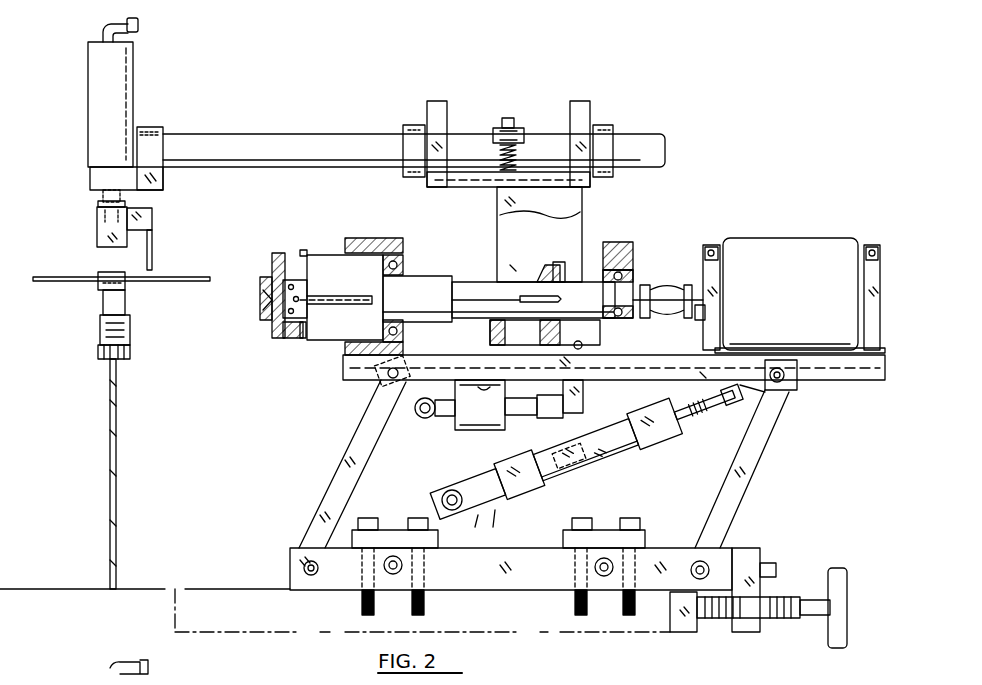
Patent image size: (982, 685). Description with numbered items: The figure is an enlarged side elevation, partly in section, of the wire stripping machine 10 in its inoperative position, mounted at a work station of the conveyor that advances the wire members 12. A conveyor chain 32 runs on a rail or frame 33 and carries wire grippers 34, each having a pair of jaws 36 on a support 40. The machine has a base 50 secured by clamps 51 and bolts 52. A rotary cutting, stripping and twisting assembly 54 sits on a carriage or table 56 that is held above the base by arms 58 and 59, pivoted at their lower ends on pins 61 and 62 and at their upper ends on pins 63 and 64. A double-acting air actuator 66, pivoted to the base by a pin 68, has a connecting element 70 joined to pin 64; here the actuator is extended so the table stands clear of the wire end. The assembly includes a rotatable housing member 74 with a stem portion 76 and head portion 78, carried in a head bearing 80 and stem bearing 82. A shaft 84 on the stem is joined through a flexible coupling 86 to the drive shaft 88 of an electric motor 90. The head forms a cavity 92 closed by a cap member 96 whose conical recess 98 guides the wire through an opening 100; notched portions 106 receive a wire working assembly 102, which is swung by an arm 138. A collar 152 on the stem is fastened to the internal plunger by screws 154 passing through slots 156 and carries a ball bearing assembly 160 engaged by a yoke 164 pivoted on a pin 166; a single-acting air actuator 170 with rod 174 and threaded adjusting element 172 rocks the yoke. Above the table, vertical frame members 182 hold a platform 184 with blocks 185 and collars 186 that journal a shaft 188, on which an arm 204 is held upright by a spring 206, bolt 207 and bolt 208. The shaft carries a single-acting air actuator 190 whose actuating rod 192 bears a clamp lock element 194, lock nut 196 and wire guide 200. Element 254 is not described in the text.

The wire stripping machine 10 is at (347, 100).
The wire member 12 is at (165, 278).
The conveyor chain 32 is at (125, 358).
The rail or frame 33 is at (116, 425).
The wire gripper 34 is at (98, 338).
The jaws 36 is at (98, 287).
The support 40 is at (130, 325).
The base 50 is at (500, 590).
The clamps 51 is at (405, 550).
The bolts 52 is at (418, 518).
The rotary cutting, stripping and twisting assembly 54 is at (368, 236).
The carriage or table 56 is at (668, 218).
The arm 58 is at (345, 458).
The arm 59 is at (748, 482).
The pin 61 is at (304, 568).
The pin 62 is at (694, 562).
The pin 63 is at (385, 380).
The pin 64 is at (797, 376).
The double-acting air actuator 66 is at (588, 472).
The pin 68 is at (445, 493).
The connecting element 70 is at (760, 405).
The rotatable housing member 74 is at (445, 275).
The stem portion 76 is at (508, 282).
The head portion 78 is at (330, 255).
The head bearing 80 is at (403, 262).
The stem bearing 82 is at (625, 270).
The shaft 84 is at (650, 290).
The flexible coupling 86 is at (711, 260).
The drive shaft 88 is at (705, 314).
The electric motor 90 is at (806, 294).
The cavity 92 is at (355, 306).
The cap member 96 is at (272, 260).
The conical recess 98 is at (262, 312).
The opening 100 is at (262, 300).
The wire working assembly 102 is at (312, 340).
The notched portions 106 is at (292, 280).
The arm 138 is at (343, 282).
The collar 152 is at (545, 265).
The screws 154 is at (520, 300).
The slots 156 is at (522, 297).
The ball bearing assembly 160 is at (567, 264).
The yoke 164 is at (583, 390).
The pin 166 is at (574, 345).
The single-acting air actuator 170 is at (497, 415).
The element 172 is at (560, 418).
The rod 174 is at (541, 451).
The vertical frame members 182 is at (497, 210).
The platform 184 is at (592, 182).
The blocks 185 is at (438, 101).
The collar 186 is at (410, 125).
The shaft 188 is at (667, 148).
The single-acting air actuator 190 is at (135, 95).
The actuating rod 192 is at (103, 196).
The clamp lock element 194 is at (97, 222).
The lock nut 196 is at (125, 204).
The wire guide 200 is at (152, 232).
The arm 204 is at (521, 128).
The spring 206 is at (503, 158).
The bolt 207 is at (505, 118).
The bolt 208 is at (310, 250).
The support block 254 is at (496, 340).